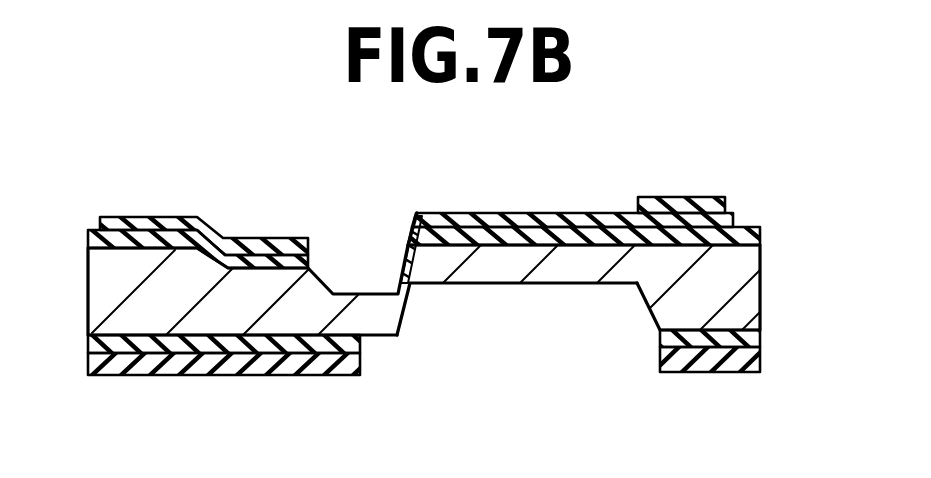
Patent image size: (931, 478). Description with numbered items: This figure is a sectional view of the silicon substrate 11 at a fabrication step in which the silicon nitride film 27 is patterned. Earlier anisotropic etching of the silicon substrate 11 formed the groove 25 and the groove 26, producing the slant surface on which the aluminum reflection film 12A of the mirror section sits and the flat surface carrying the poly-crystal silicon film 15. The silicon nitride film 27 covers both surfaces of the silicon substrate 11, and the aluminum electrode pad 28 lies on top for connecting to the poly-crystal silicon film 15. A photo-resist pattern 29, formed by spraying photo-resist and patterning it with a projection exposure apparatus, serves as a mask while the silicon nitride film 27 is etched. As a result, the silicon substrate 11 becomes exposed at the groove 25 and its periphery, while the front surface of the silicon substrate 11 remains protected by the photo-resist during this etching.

The silicon substrate 11 is at (743, 290).
The reflection film 12A is at (414, 217).
The poly-crystal silicon film 15 is at (167, 230).
The groove 25 is at (333, 243).
The groove 26 is at (516, 322).
The silicon nitride film 27 is at (760, 230).
The electrode pad 28 is at (653, 207).
The photo-resist pattern 29 is at (142, 363).